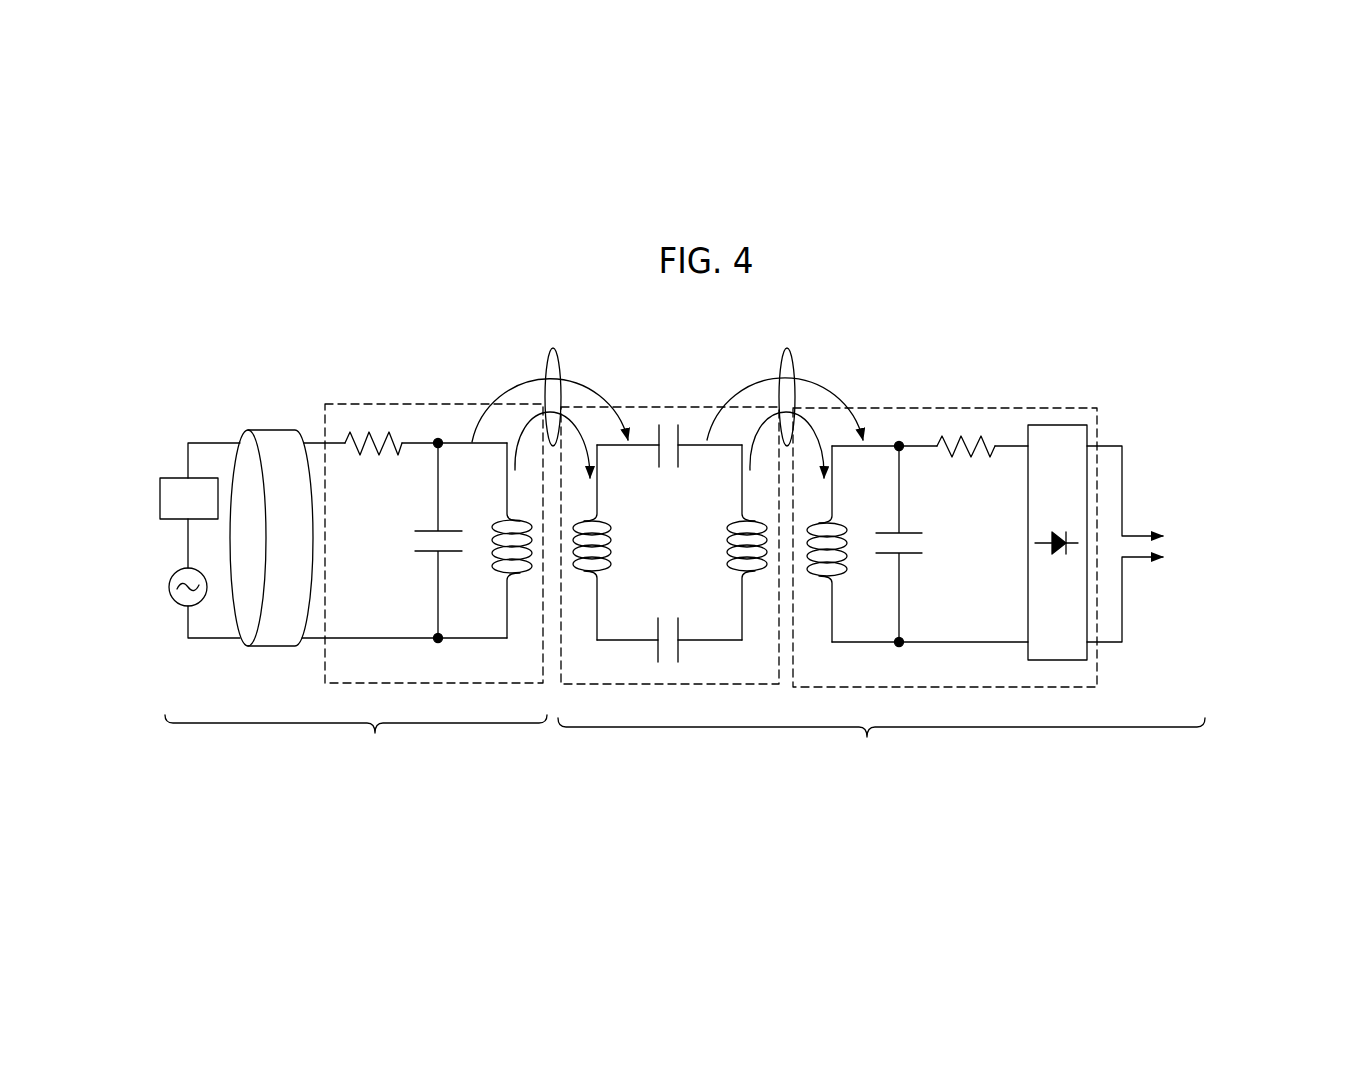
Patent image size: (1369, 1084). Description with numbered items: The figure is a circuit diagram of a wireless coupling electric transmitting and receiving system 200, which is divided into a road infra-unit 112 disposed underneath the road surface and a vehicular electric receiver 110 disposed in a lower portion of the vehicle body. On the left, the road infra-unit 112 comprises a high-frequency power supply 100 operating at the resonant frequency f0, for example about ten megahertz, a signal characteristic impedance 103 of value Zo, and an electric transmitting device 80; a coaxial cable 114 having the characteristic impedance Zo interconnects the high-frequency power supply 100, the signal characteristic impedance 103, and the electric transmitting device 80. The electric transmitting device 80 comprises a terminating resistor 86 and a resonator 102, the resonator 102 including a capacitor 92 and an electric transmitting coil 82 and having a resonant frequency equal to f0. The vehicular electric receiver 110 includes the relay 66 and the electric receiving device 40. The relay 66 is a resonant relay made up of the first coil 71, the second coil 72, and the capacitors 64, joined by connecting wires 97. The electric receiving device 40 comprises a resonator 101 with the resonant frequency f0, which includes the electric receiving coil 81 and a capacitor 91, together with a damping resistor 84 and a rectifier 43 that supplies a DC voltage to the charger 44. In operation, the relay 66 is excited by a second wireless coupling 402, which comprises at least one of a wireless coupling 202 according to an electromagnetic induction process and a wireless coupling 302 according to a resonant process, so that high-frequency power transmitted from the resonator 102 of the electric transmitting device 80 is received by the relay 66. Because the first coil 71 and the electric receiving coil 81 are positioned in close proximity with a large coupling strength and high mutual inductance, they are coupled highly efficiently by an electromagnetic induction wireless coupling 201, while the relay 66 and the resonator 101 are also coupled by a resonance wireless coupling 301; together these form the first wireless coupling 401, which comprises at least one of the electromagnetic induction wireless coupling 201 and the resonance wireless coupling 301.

The wireless coupling electric transmitting and receiving system 200 is at (298, 340).
The coaxial cable 114 is at (283, 428).
The signal characteristic impedance 103 is at (160, 496).
The high-frequency power supply 100 is at (170, 588).
The electric transmitting device 80 is at (381, 403).
The terminating resistor 86 is at (373, 460).
The capacitor 92 is at (415, 540).
The electric transmitting coil 82 is at (492, 532).
The resonator 102 is at (463, 647).
The wireless coupling according to an electromagnetic induction process 202 is at (508, 456).
The wireless coupling according to a resonant process 302 is at (508, 392).
The second wireless coupling 402 is at (553, 346).
The relay 66 is at (672, 405).
The connecting wire 97 is at (640, 449).
The capacitors 64 is at (672, 470).
The second coil 72 is at (611, 534).
The first coil 71 is at (726, 533).
The electromagnetic induction wireless coupling 201 is at (744, 456).
The resonance wireless coupling 301 is at (742, 392).
The first wireless coupling 401 is at (788, 346).
The electric receiving device 40 is at (958, 406).
The electric receiving coil 81 is at (847, 538).
The capacitor 91 is at (924, 541).
The damping resistor 84 is at (967, 461).
The rectifier 43 is at (1065, 662).
The resonator 101 is at (875, 650).
The charger 44 is at (1207, 544).
The road infra-unit 112 is at (356, 741).
The vehicular electric receiver 110 is at (881, 743).